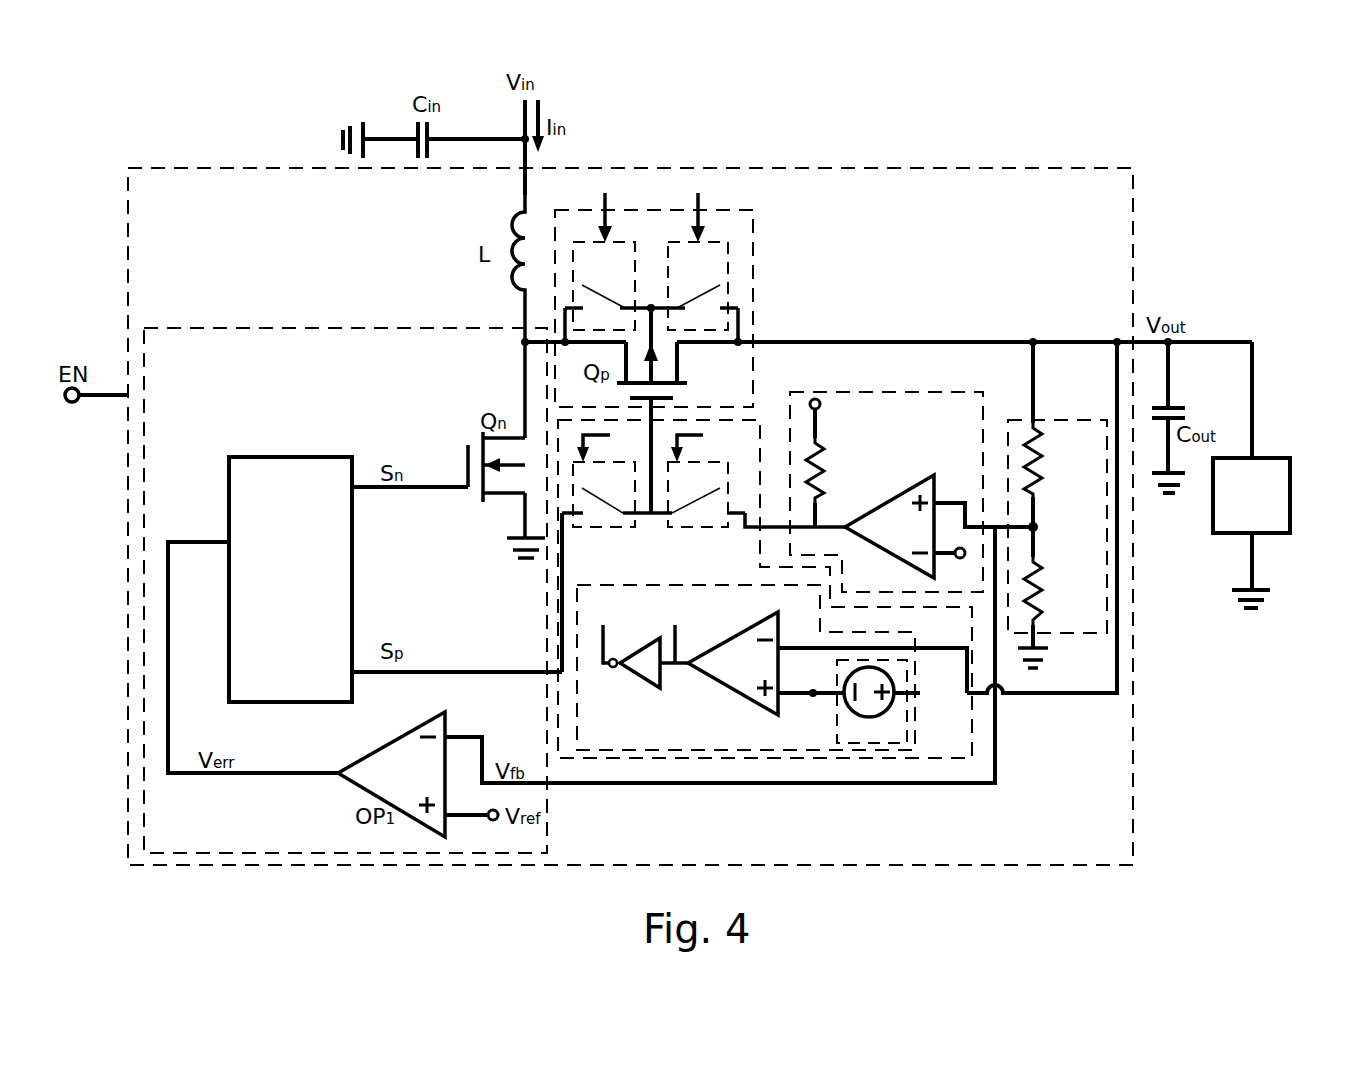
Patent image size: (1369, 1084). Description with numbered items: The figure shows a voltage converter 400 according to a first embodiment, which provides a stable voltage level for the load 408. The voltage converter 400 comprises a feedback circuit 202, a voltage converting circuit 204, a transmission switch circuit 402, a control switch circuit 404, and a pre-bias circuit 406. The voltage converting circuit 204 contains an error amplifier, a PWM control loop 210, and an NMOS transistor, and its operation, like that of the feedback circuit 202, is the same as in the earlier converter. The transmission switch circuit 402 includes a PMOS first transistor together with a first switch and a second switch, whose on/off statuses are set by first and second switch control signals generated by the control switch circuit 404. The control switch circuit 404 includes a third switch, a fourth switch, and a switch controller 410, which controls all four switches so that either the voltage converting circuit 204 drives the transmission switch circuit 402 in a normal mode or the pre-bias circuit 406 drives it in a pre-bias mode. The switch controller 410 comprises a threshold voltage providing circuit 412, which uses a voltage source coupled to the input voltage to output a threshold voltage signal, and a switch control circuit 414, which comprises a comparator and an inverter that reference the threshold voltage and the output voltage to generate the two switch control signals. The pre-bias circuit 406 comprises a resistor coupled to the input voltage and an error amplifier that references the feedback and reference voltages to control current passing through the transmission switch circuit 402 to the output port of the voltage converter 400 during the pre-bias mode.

The voltage converter 400 is at (1188, 148).
The feedback circuit 202 is at (1107, 575).
The voltage converting circuit 204 is at (548, 818).
The PWM control loop 210 is at (290, 457).
The transmission switch circuit 402 is at (753, 312).
The control switch circuit 404 is at (773, 760).
The pre-bias circuit 406 is at (872, 392).
The load 408 is at (1290, 496).
The switch controller 410 is at (772, 702).
The threshold voltage providing circuit 412 is at (872, 745).
The switch control circuit 414 is at (688, 735).